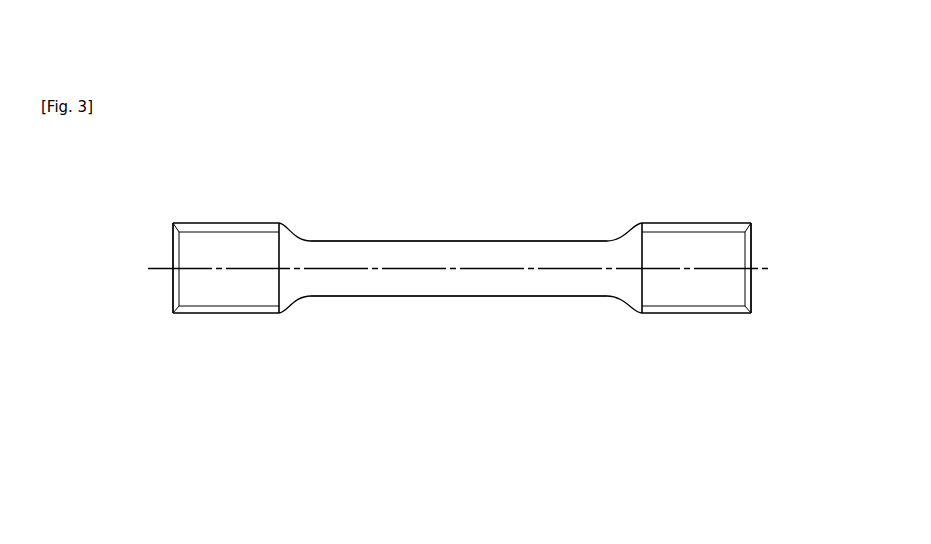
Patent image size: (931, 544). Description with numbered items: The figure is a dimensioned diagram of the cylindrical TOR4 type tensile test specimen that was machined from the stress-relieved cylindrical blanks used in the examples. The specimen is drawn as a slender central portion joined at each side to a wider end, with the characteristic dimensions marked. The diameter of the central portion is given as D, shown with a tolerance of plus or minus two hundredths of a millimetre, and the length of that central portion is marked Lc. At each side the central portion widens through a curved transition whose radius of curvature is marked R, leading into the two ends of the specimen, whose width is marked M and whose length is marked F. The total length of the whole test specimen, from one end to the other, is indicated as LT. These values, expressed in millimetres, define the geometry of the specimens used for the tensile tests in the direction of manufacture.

The width of the two ends of the test specimen M is at (110, 223).
The length of the central portion of the test specimen Lc is at (607, 162).
The diameter of the central portion of the test specimen D is at (460, 217).
The radius of curvature between the central portion and the ends R is at (293, 305).
The length of the two ends of the test specimen F is at (173, 313).
The total length of the test specimen LT is at (751, 467).